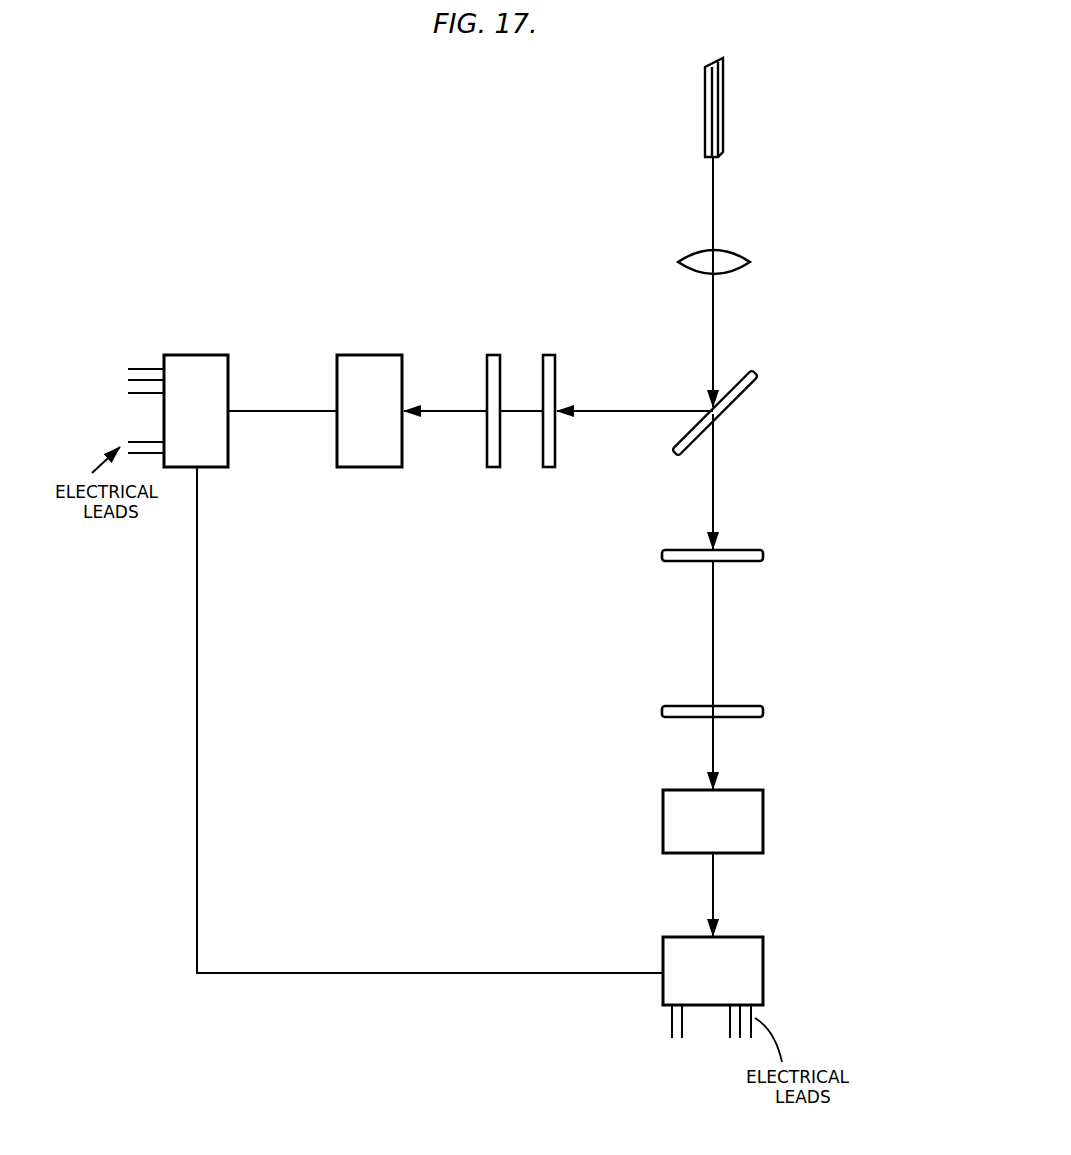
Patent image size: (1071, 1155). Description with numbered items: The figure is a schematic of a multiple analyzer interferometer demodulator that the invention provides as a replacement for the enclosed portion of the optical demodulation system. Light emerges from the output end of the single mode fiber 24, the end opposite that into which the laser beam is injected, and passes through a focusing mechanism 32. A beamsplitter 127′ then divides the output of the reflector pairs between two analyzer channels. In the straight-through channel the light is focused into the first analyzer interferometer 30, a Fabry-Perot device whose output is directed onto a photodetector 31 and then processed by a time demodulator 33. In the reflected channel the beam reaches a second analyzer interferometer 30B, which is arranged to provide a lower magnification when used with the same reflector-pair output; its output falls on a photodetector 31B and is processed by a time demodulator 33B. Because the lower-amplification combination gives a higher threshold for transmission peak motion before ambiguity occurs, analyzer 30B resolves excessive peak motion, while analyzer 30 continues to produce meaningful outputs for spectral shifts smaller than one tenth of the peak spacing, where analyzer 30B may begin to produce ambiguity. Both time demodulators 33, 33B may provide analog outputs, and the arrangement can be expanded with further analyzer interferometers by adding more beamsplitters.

The single mode fiber 24 is at (728, 135).
The focusing mechanism 32 is at (735, 273).
The beamsplitter 127′ is at (740, 402).
The analyzer interferometer 30 is at (777, 543).
The photodetector 31 is at (767, 817).
The time demodulator 33 is at (768, 962).
The time demodulator 33B is at (208, 352).
The photodetector 31B is at (383, 468).
The second analyzer interferometer 30B is at (560, 350).